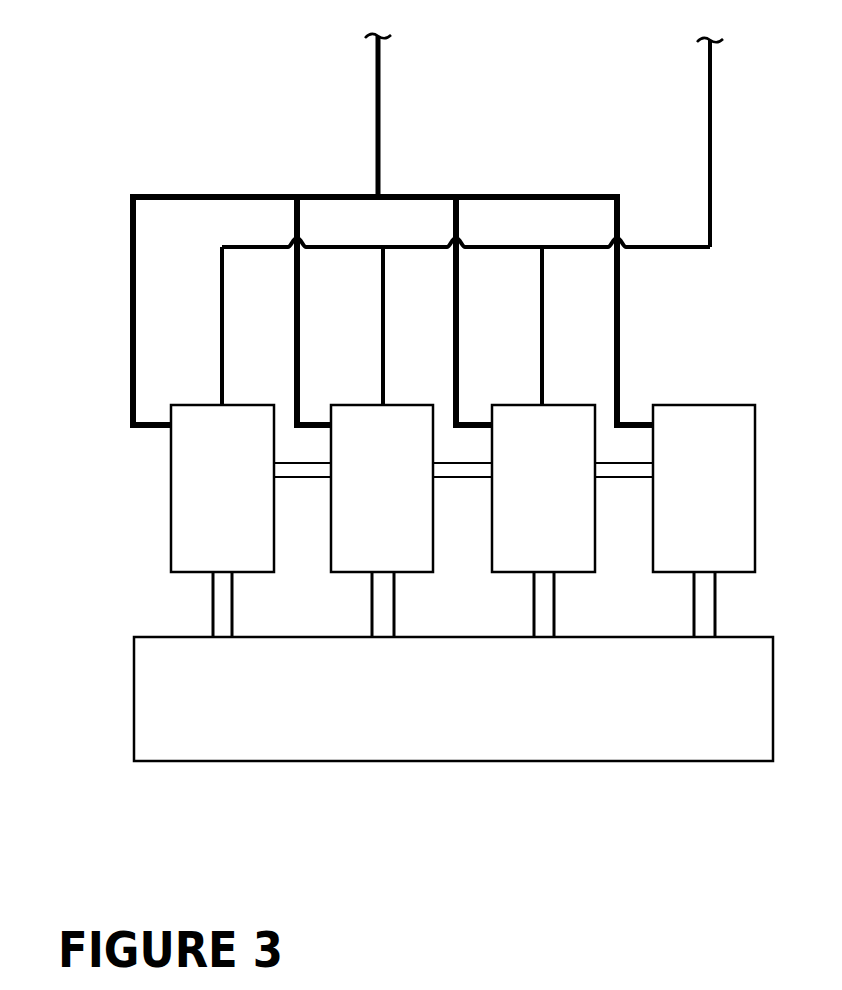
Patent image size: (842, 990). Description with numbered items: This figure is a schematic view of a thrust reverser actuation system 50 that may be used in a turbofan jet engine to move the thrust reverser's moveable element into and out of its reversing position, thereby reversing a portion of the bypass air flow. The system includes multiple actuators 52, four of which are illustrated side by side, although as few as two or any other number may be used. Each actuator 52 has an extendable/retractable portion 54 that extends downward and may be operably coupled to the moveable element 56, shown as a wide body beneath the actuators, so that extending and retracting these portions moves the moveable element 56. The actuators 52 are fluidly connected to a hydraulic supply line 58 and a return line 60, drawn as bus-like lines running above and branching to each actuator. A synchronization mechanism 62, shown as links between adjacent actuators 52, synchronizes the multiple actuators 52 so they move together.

The thrust reverser actuation system 50 is at (95, 210).
The actuator 52 is at (171, 533).
The extendable/retractable portion 54 is at (211, 613).
The moveable element 56 is at (276, 762).
The hydraulic supply line 58 is at (375, 88).
The return line 60 is at (707, 100).
The synchronization mechanism 62 is at (321, 478).